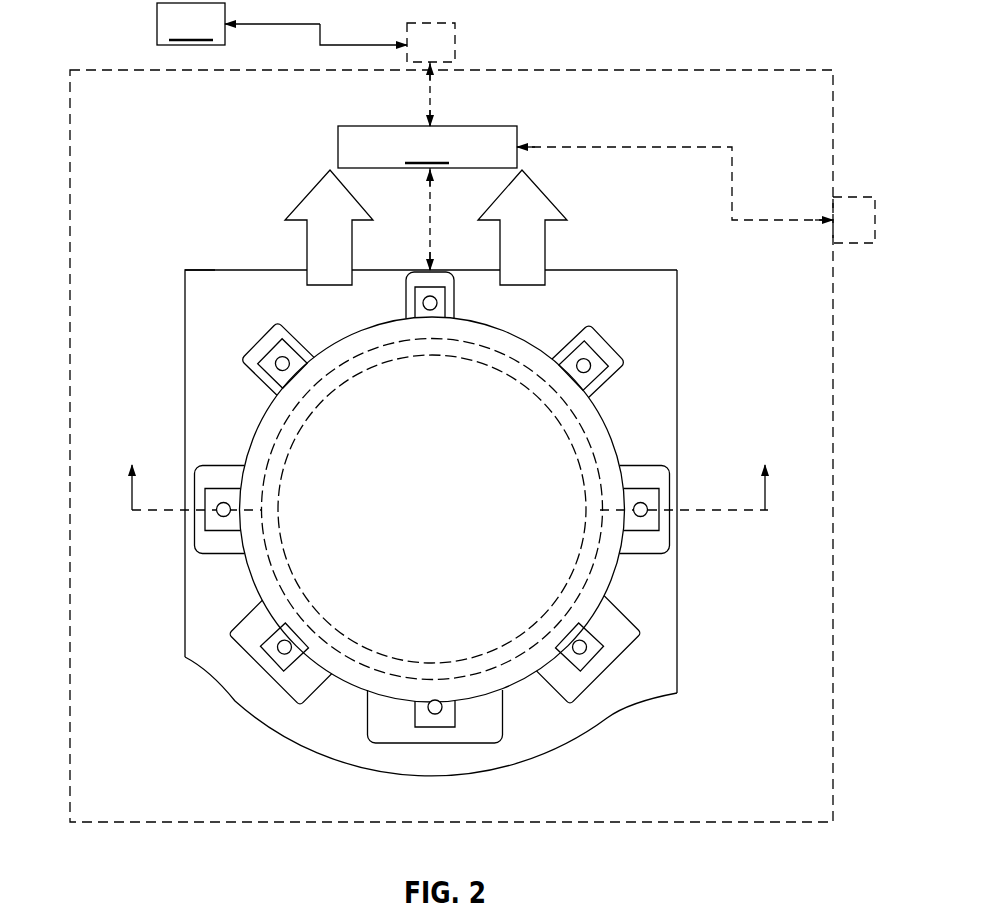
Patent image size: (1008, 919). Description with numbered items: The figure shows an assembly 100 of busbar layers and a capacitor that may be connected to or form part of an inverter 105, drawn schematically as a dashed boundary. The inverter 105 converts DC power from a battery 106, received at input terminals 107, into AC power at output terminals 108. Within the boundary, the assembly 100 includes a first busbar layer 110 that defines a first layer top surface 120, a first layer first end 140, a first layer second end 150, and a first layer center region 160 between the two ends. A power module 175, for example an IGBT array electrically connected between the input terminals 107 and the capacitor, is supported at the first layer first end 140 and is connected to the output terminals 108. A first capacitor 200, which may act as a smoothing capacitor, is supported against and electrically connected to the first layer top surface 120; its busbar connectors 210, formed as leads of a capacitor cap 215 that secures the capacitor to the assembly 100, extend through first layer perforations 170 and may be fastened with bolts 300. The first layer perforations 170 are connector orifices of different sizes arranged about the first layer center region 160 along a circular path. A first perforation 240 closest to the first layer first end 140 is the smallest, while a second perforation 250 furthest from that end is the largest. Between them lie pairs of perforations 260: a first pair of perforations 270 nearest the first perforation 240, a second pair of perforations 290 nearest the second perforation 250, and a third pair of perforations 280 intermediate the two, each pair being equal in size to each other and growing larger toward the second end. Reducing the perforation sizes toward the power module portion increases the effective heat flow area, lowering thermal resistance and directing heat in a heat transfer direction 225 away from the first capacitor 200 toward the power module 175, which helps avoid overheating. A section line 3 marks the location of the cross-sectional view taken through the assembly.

The section line 3 is at (449, 468).
The assembly 100 is at (190, 190).
The inverter 105 is at (845, 478).
The battery 106 is at (282, 24).
The input terminals 107 is at (455, 50).
The output terminals 108 is at (848, 198).
The first busbar layer 110 is at (195, 285).
The first layer top surface 120 is at (195, 385).
The first layer first end 140 is at (600, 270).
The first layer second end 150 is at (463, 781).
The first layer center region 160 is at (672, 640).
The first layer perforations 170 is at (207, 547).
The power module 175 is at (427, 198).
The first capacitor 200 is at (548, 428).
The busbar connectors 210 is at (590, 657).
The capacitor cap 215 is at (612, 452).
The heat transfer direction 225 is at (556, 213).
The first perforation 240 is at (460, 298).
The second perforation 250 is at (470, 731).
The pairs of perforations 260 is at (597, 318).
The first pair of perforations 270 is at (278, 393).
The third pair of perforations 280 is at (233, 546).
The second pair of perforations 290 is at (262, 616).
The bolts 300 is at (272, 660).